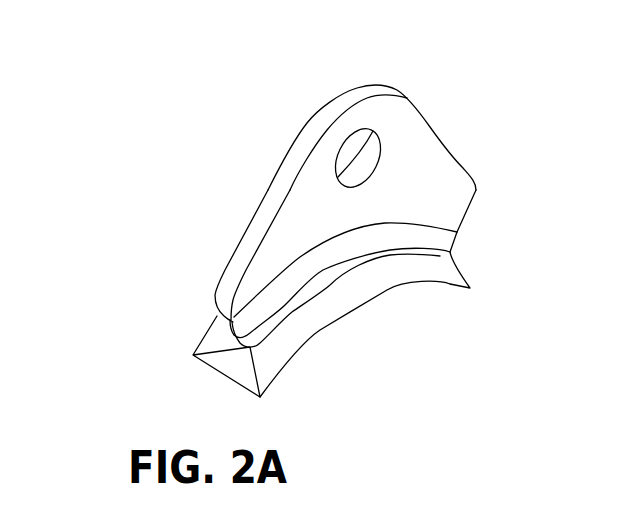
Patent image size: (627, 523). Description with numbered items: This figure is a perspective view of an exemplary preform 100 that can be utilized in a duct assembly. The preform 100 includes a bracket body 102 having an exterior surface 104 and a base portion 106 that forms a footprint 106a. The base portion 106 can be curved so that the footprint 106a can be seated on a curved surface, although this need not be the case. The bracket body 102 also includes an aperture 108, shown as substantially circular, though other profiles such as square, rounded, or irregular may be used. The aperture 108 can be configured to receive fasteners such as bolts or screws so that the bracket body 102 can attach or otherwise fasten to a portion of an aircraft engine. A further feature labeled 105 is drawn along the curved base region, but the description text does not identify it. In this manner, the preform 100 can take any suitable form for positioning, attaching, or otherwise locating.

The preform 100 is at (374, 232).
The bracket body 102 is at (370, 117).
The exterior surface 104 is at (281, 232).
The rib 105 is at (333, 282).
The base portion 106 is at (260, 397).
The footprint 106a is at (448, 284).
The aperture 108 is at (343, 148).